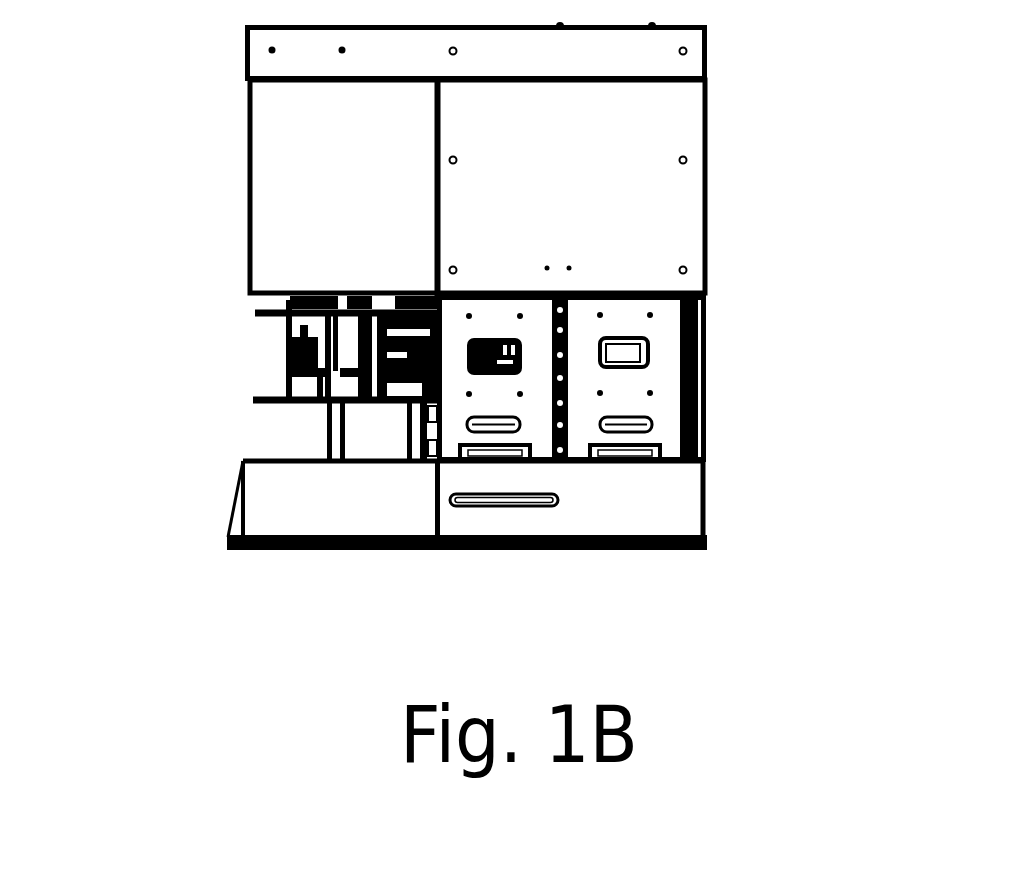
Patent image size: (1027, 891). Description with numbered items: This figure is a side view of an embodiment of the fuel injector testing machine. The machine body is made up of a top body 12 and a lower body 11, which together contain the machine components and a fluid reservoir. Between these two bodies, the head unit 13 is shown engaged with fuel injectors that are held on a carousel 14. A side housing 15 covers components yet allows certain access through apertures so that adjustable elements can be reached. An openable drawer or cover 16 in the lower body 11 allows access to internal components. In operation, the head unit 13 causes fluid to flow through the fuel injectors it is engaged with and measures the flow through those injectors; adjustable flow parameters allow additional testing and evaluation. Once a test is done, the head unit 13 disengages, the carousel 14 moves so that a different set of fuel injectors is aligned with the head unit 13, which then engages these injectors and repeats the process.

The lower body 11 is at (290, 487).
The top body 12 is at (322, 183).
The head unit 13 is at (232, 306).
The carousel 14 is at (177, 295).
The side housing 15 is at (631, 396).
The openable drawer or cover 16 is at (675, 497).